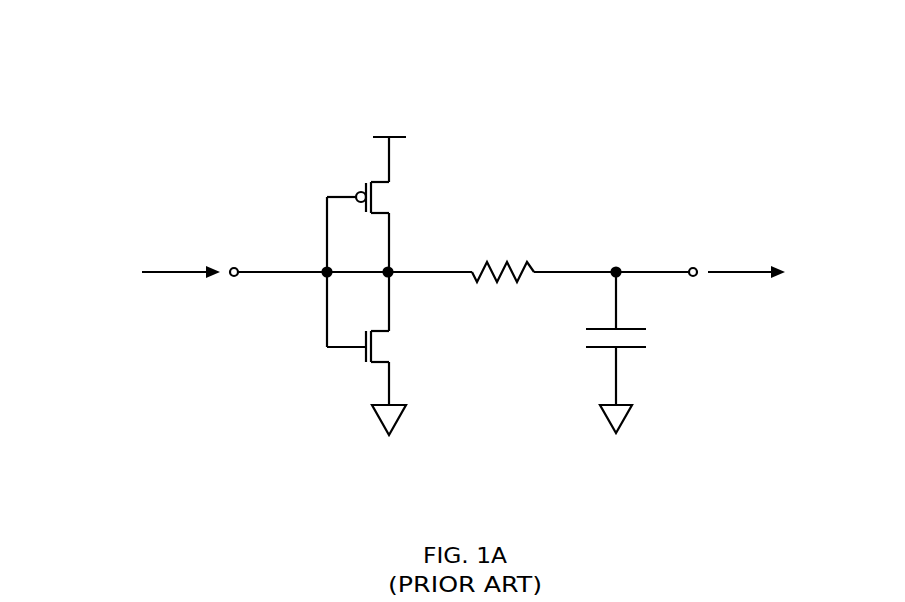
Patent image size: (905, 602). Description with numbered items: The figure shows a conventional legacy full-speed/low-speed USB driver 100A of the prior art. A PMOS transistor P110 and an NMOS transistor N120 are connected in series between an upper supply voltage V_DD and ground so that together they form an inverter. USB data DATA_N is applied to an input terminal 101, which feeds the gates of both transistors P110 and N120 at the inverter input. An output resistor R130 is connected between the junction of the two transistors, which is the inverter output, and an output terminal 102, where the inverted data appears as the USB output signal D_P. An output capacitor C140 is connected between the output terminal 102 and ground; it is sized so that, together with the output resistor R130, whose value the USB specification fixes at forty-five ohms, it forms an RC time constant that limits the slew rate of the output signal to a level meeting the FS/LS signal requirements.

The legacy FS/LS USB driver 100A is at (104, 69).
The input terminal 101 is at (235, 267).
The output terminal 102 is at (694, 266).
The PMOS transistor P110 is at (391, 197).
The NMOS transistor N120 is at (391, 346).
The output resistor R130 is at (503, 256).
The output capacitor C140 is at (651, 339).